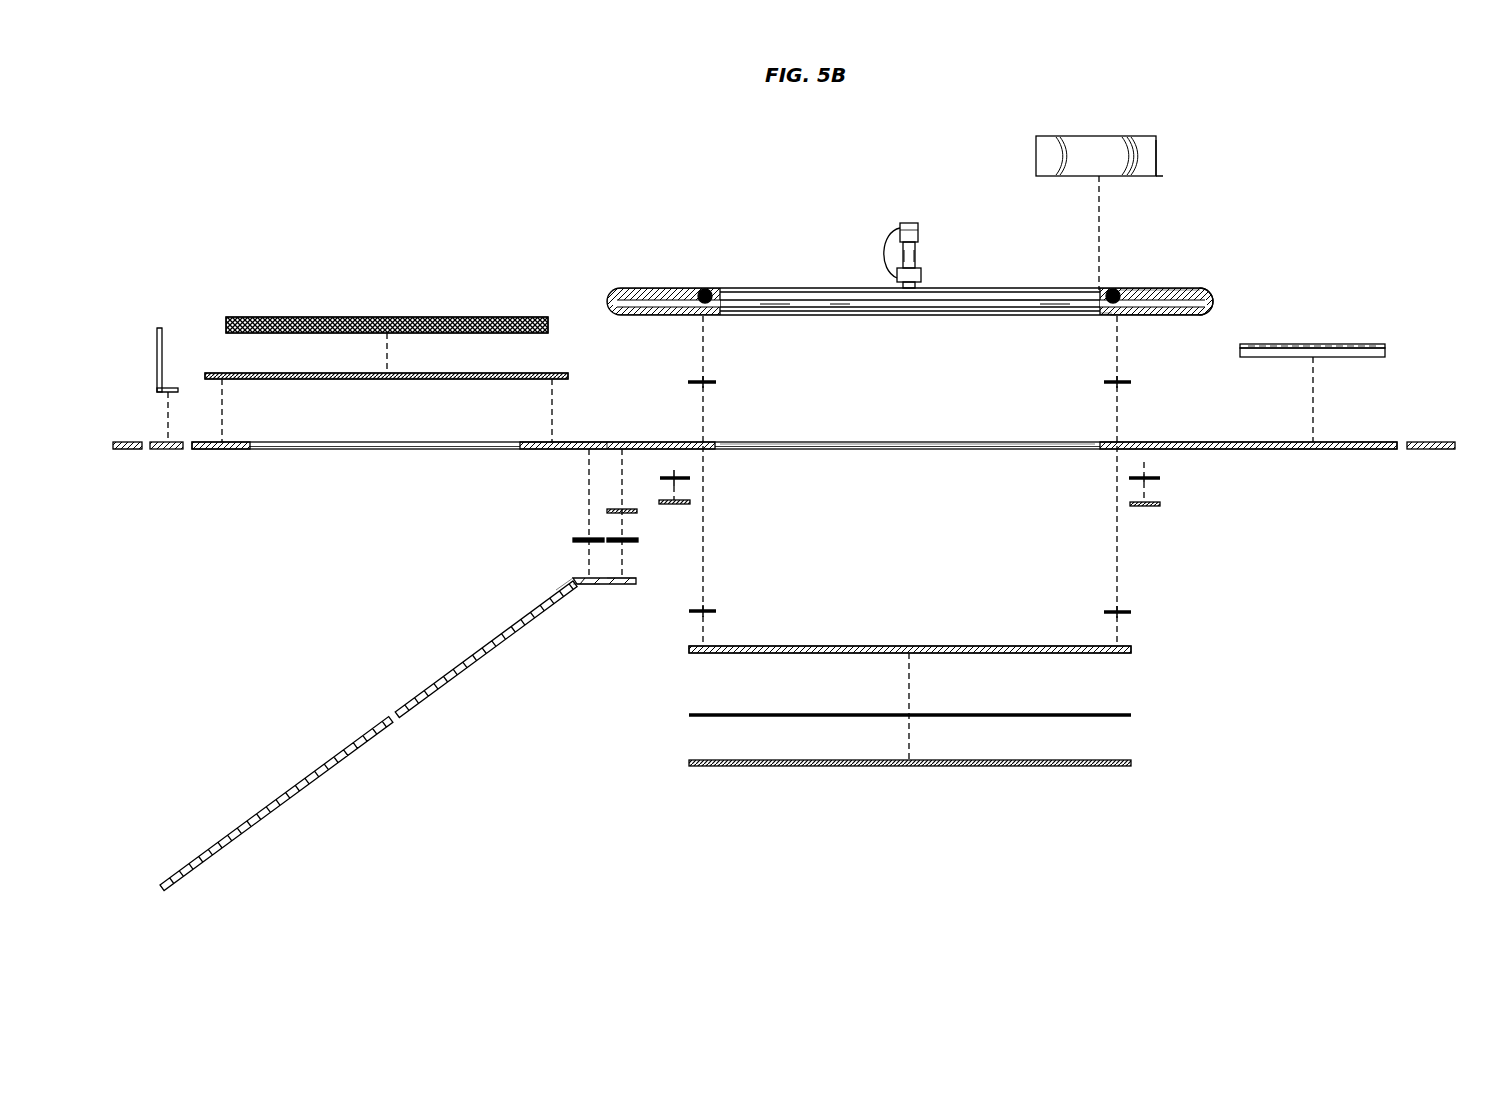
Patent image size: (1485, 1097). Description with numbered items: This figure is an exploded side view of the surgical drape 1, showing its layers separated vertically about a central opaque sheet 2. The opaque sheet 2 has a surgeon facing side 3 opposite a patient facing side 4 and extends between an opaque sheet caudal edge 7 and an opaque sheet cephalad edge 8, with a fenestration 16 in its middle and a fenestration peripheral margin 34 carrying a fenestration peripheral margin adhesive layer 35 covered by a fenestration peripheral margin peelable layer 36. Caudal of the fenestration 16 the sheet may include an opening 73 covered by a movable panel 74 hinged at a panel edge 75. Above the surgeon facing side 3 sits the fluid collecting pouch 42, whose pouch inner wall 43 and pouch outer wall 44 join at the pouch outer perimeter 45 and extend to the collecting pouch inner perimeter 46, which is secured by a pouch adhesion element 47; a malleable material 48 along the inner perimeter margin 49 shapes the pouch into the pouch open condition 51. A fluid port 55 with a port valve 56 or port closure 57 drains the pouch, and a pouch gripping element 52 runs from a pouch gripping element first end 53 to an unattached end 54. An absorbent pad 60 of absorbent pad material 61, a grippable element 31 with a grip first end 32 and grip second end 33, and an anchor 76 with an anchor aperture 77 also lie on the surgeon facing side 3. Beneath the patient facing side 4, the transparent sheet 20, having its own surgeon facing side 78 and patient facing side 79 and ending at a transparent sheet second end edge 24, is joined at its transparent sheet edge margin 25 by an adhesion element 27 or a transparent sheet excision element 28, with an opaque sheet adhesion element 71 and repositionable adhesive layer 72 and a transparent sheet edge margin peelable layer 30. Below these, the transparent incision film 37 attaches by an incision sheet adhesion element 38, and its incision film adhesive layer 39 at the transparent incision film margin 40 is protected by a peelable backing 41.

The surgical drape 1 is at (1372, 153).
The opaque sheet 2 is at (1387, 433).
The surgeon facing side 3 is at (1222, 442).
The patient facing side 4 is at (1298, 450).
The opaque sheet caudal edge 7 is at (113, 450).
The opaque sheet cephalad edge 8 is at (1455, 450).
The fenestration 16 is at (990, 446).
The transparent sheet 20 is at (362, 767).
The transparent sheet second end edge 24 is at (160, 888).
The transparent sheet edge margin 25 is at (602, 585).
The adhesion element 27 is at (632, 543).
The transparent sheet excision element 28 is at (555, 590).
The transparent sheet edge margin peelable layer 30 is at (638, 511).
The grippable element 31 is at (155, 350).
The grip first end 32 is at (170, 388).
The grip second end 33 is at (162, 328).
The fenestration peripheral margin 34 is at (1118, 442).
The fenestration peripheral margin adhesive layer 35 is at (664, 478).
The fenestration peripheral margin peelable layer 36 is at (690, 505).
The transparent incision film 37 is at (1132, 652).
The incision sheet adhesion element 38 is at (705, 610).
The incision film adhesive layer 39 is at (1128, 717).
The transparent incision film margin 40 is at (910, 649).
The peelable backing 41 is at (1115, 767).
The fluid collecting pouch 42 is at (750, 222).
The pouch inner wall 43 is at (1180, 318).
The pouch outer wall 44 is at (1190, 290).
The pouch outer perimeter 45 is at (1214, 296).
The collecting pouch inner perimeter 46 is at (1024, 297).
The pouch adhesion element 47 is at (700, 381).
The malleable material 48 is at (1116, 290).
The inner perimeter margin 49 is at (1105, 318).
The pouch open condition 51 is at (910, 301).
The pouch gripping element 52 is at (1158, 150).
The pouch gripping element first end 53 is at (1150, 178).
The pouch gripping element unattached end 54 is at (1136, 136).
The fluid port 55 is at (918, 266).
The port valve 56 is at (918, 240).
The port closure 57 is at (905, 222).
The absorbent pad 60 is at (386, 317).
The absorbent pad material 61 is at (387, 325).
The opaque sheet adhesion element 71 is at (588, 538).
The removable and repositionable adhesive layer 72 is at (622, 540).
The opening 73 is at (520, 442).
The movable panel 74 is at (568, 374).
The panel edge 75 is at (386, 376).
The anchor 76 is at (1288, 345).
The anchor aperture 77 is at (1345, 344).
The surgeon facing side 78 is at (320, 760).
The patient facing side 79 is at (350, 756).